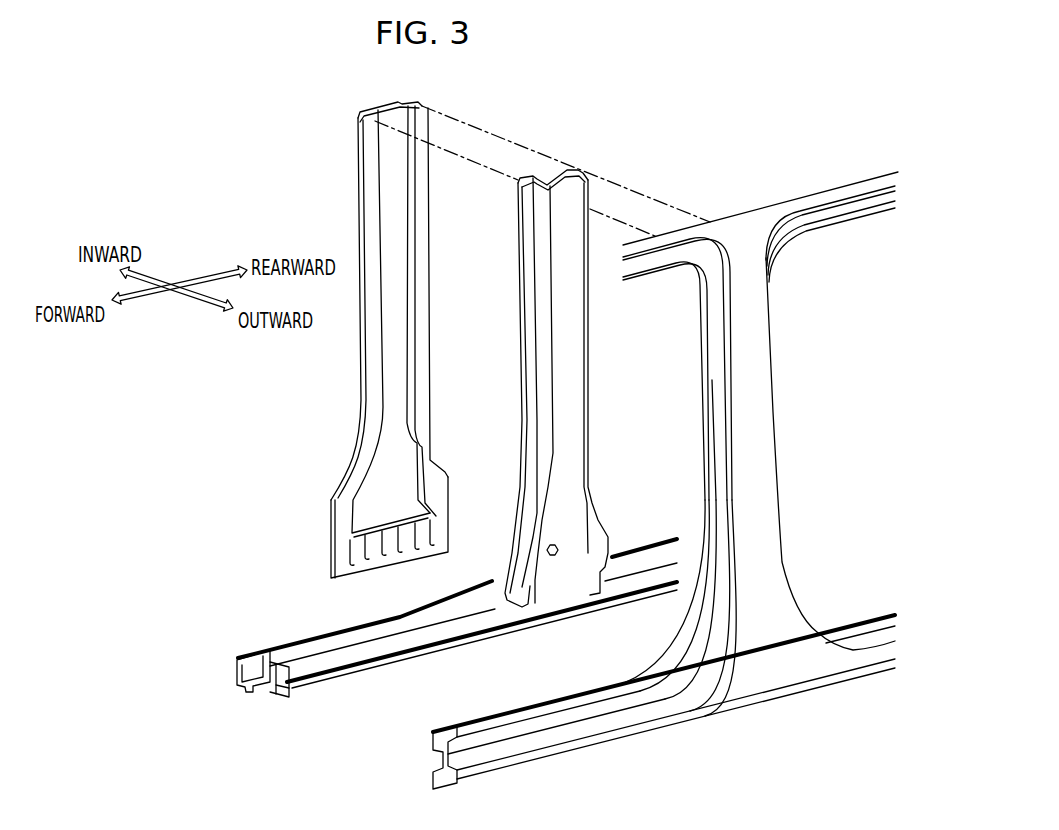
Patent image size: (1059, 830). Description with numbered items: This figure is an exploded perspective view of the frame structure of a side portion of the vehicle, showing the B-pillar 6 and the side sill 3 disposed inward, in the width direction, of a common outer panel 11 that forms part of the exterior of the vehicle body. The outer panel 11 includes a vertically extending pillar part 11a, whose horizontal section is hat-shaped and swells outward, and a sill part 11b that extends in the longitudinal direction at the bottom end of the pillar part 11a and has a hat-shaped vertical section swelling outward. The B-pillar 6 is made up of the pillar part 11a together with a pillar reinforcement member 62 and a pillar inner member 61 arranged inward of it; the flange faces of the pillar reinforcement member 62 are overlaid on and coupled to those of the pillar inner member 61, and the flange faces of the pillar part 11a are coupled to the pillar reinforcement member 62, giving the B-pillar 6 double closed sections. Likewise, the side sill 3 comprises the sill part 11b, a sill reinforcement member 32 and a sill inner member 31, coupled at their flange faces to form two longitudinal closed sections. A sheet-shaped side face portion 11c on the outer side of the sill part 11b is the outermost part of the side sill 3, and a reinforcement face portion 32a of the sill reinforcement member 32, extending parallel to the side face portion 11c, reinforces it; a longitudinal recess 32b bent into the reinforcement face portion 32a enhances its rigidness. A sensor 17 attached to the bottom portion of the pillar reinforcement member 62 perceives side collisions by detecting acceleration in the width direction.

The side sill 3 is at (284, 627).
The B-pillar 6 is at (346, 352).
The outer panel 11 is at (756, 204).
The pillar part 11a is at (759, 348).
The sill part 11b is at (666, 707).
The side face portion 11c is at (490, 754).
The sensor 17 is at (558, 552).
The sill inner member 31 is at (231, 663).
The sill reinforcement member 32 is at (298, 699).
The reinforcement face portion 32a is at (359, 673).
The recess 32b is at (400, 658).
The pillar inner member 61 is at (440, 328).
The pillar reinforcement member 62 is at (604, 391).